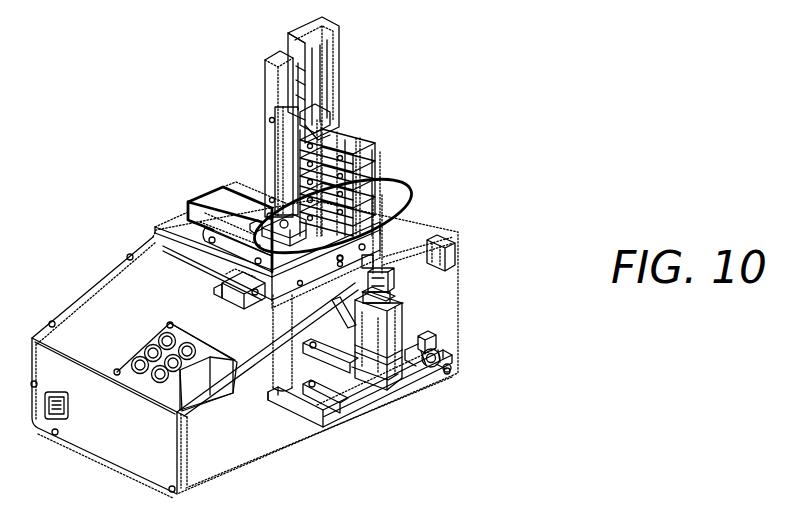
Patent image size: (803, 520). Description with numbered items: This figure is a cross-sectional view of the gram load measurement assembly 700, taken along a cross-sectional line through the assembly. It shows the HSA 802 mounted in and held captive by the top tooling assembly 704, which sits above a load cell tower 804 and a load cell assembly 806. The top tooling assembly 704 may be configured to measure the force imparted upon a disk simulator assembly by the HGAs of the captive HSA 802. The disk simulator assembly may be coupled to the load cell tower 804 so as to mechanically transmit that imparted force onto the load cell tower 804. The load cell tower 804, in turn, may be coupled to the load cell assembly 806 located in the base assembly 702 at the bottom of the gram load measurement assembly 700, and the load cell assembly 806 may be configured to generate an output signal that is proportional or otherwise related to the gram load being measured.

The gram load measurement assembly 700 is at (115, 118).
The base assembly 702 is at (85, 293).
The top tooling assembly 704 is at (341, 94).
The HSA 802 is at (398, 186).
The load cell tower 804 is at (373, 239).
The load cell assembly 806 is at (391, 289).